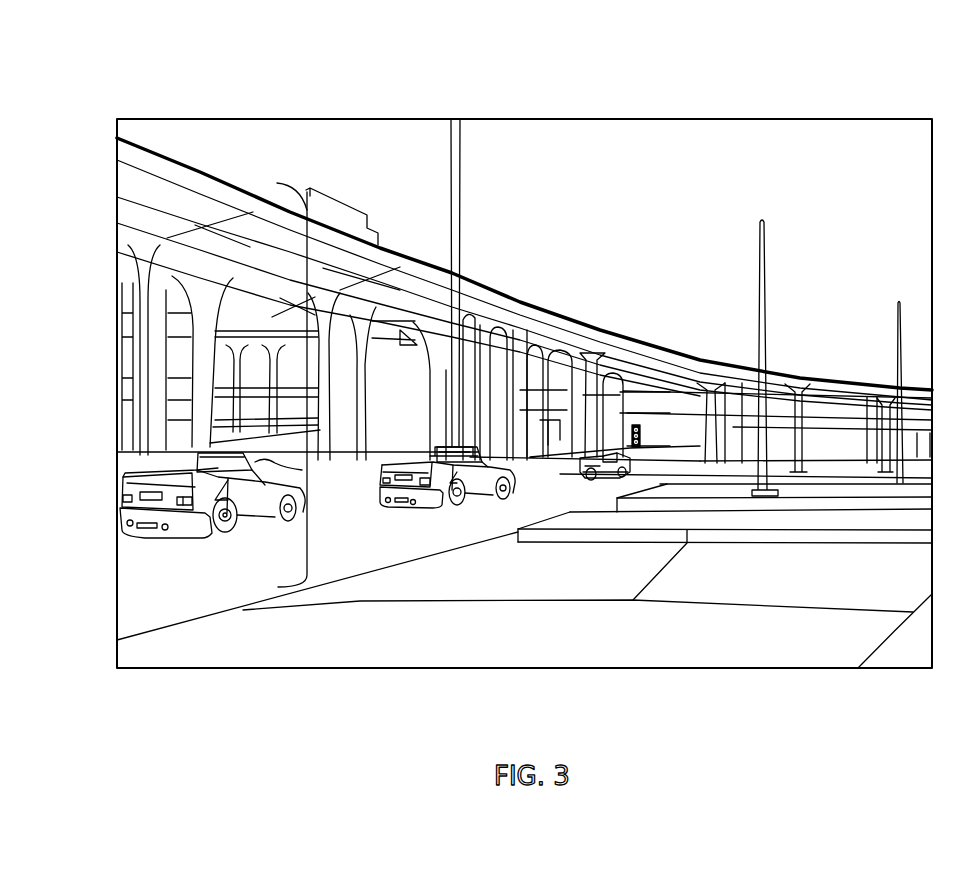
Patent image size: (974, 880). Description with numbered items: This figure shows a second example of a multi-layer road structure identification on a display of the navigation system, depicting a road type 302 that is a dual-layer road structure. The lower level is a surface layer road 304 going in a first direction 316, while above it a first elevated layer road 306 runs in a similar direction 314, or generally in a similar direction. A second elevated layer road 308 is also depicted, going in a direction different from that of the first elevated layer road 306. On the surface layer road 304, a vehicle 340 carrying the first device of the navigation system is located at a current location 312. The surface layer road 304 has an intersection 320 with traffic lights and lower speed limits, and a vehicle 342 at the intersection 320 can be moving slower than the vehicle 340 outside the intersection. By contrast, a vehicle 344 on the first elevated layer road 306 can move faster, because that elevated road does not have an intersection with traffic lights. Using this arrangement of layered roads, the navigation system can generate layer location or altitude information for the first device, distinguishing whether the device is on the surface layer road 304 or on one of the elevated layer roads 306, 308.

The road type 302 is at (346, 470).
The surface layer road 304 is at (178, 630).
The first elevated layer road 306 is at (226, 170).
The second elevated layer road 308 is at (548, 350).
The current location 312 is at (470, 500).
The similar direction 314 is at (171, 158).
The first direction 316 is at (218, 580).
The intersection 320 is at (632, 462).
The vehicle 340 is at (490, 453).
The vehicle 342 is at (583, 475).
The vehicle 344 is at (345, 188).